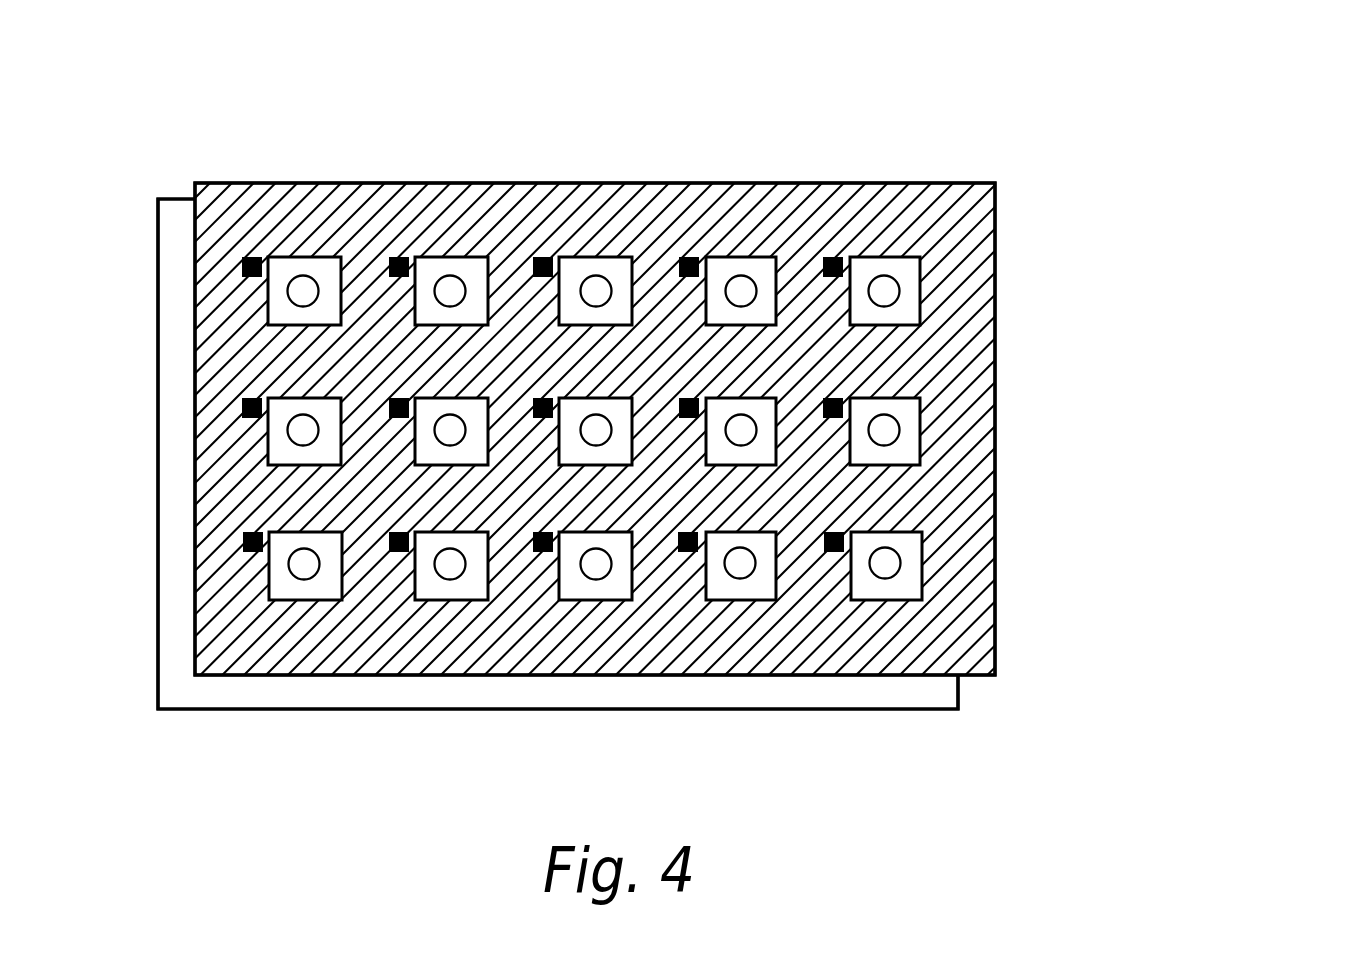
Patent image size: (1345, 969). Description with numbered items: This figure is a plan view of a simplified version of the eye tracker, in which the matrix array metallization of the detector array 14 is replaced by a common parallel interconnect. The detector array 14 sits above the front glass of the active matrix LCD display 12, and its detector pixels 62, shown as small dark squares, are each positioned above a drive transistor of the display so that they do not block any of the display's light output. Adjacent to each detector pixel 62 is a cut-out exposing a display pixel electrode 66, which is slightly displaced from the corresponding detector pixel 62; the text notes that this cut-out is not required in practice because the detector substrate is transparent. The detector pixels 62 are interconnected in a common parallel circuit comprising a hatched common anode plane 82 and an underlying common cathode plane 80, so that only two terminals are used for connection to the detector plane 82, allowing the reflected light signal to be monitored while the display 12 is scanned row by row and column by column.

The active matrix LCD display 12 is at (960, 692).
The detector array 14 is at (995, 222).
The detector pixel 62 is at (402, 258).
The pixel electrode 66 is at (738, 283).
The cathode plane 80 is at (808, 696).
The anode plane 82 is at (1028, 370).